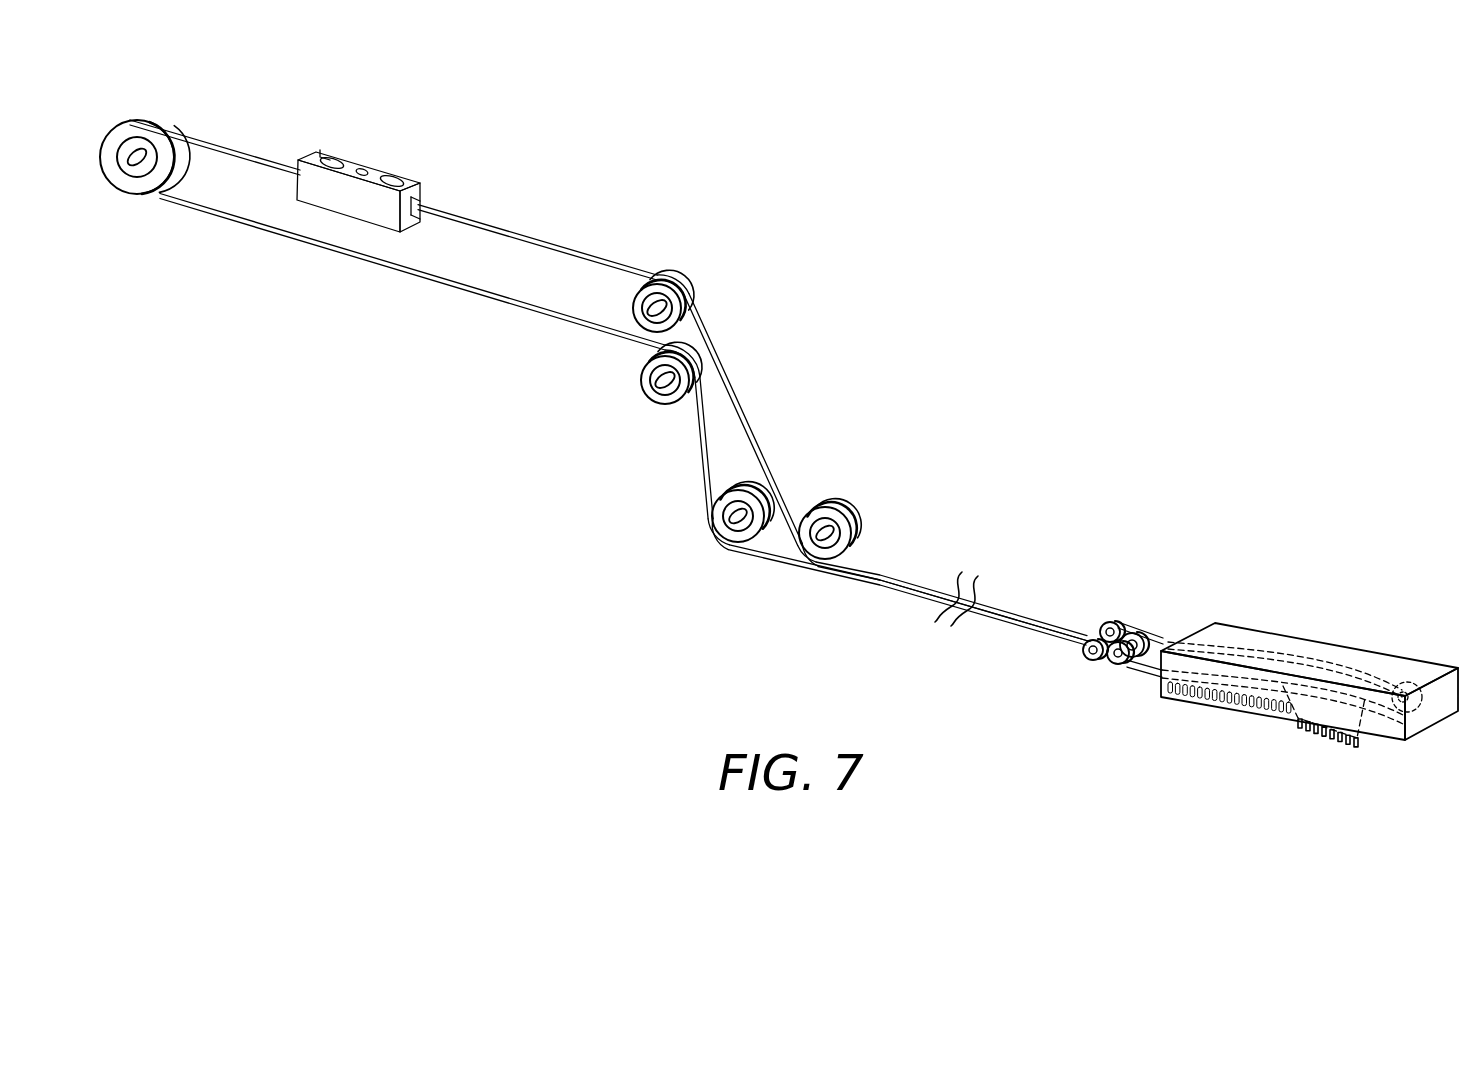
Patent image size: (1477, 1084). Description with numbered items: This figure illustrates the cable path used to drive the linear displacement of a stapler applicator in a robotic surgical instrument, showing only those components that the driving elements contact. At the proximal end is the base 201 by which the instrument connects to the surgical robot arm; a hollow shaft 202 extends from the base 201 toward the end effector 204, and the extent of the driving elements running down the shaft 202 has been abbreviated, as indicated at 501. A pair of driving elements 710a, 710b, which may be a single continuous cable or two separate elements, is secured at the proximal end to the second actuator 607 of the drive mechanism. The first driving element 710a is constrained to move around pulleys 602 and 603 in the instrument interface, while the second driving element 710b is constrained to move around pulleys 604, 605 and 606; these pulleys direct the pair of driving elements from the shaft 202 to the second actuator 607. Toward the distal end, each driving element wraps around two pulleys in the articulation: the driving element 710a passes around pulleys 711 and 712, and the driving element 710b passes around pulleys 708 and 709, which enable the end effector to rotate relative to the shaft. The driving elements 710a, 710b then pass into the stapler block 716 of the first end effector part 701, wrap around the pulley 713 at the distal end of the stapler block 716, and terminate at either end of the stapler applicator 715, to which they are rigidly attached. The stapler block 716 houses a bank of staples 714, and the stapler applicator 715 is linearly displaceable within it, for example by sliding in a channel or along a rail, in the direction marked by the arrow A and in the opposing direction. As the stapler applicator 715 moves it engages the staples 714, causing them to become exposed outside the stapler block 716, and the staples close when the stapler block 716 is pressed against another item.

The base 201 is at (519, 124).
The shaft 202 is at (1037, 492).
The end effector 204 is at (1375, 547).
The abbreviation of driving elements 501 is at (975, 573).
The pulley 602 is at (828, 506).
The pulley 603 is at (683, 281).
The pulley 604 is at (719, 540).
The pulley 605 is at (651, 400).
The pulley 606 is at (138, 191).
The second actuator 607 is at (378, 184).
The first end effector part 701 is at (1317, 680).
The pulley 708 is at (1105, 623).
The pulley 709 is at (1129, 632).
The driving element 710a is at (540, 236).
The driving element 710b is at (428, 283).
The pulley 711 is at (1080, 656).
The pulley 712 is at (1100, 672).
The pulley 713 is at (1411, 669).
The staples 714 is at (1222, 701).
The stapler applicator 715 is at (1361, 723).
The stapler block 716 is at (1248, 639).